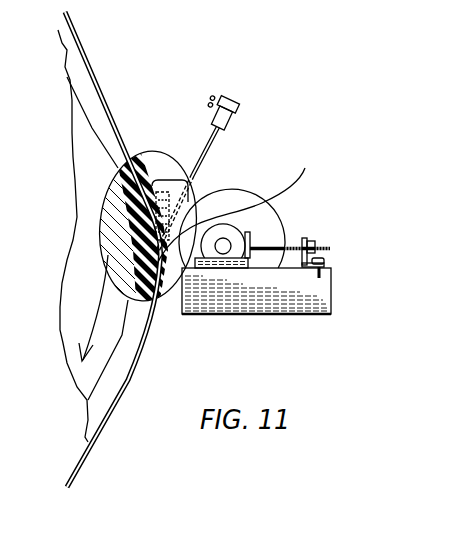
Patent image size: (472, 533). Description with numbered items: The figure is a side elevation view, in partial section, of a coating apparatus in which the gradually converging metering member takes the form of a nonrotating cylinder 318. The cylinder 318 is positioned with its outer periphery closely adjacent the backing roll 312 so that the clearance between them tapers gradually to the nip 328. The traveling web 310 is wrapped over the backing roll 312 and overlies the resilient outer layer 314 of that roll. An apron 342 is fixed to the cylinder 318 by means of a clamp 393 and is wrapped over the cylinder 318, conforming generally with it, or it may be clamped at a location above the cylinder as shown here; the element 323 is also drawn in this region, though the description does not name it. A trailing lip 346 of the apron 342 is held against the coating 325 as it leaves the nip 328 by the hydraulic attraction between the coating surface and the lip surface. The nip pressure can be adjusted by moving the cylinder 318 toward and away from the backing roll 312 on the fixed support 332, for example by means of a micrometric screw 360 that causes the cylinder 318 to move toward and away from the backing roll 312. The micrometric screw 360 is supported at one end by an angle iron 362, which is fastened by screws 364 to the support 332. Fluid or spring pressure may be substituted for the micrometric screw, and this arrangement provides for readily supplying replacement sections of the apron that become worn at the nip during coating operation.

The traveling web 310 is at (75, 24).
The backing roll 312 is at (85, 128).
The resilient outer layer 314 is at (115, 127).
The applicator head 323 is at (163, 180).
The clamp 393 is at (232, 100).
The apron 342 is at (196, 168).
The cylinder 318 is at (305, 168).
The micrometric screw 360 is at (273, 247).
The angle iron 362 is at (306, 242).
The screws 364 is at (324, 262).
The support 332 is at (321, 293).
The nip 328 is at (100, 226).
The trailing lip 346 is at (165, 294).
The coating 325 is at (137, 368).